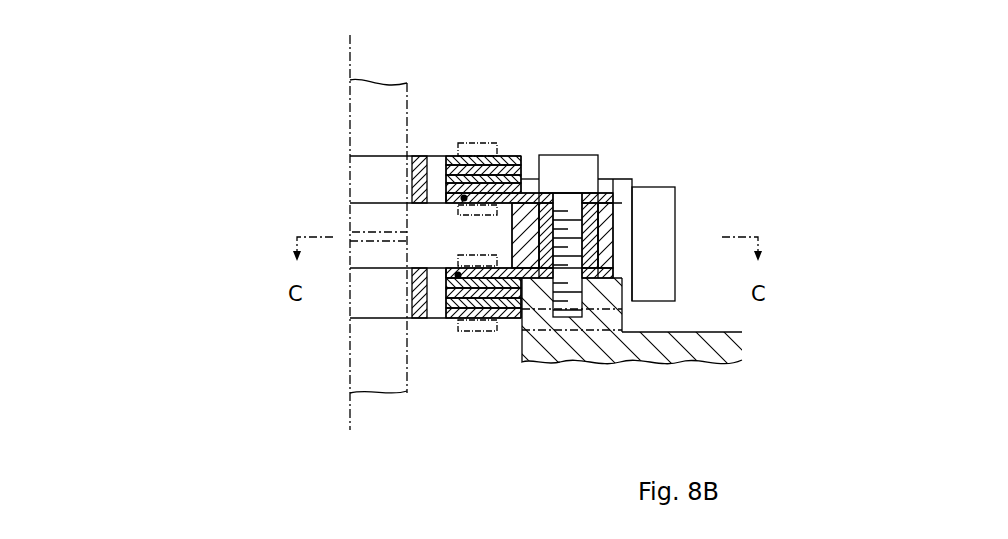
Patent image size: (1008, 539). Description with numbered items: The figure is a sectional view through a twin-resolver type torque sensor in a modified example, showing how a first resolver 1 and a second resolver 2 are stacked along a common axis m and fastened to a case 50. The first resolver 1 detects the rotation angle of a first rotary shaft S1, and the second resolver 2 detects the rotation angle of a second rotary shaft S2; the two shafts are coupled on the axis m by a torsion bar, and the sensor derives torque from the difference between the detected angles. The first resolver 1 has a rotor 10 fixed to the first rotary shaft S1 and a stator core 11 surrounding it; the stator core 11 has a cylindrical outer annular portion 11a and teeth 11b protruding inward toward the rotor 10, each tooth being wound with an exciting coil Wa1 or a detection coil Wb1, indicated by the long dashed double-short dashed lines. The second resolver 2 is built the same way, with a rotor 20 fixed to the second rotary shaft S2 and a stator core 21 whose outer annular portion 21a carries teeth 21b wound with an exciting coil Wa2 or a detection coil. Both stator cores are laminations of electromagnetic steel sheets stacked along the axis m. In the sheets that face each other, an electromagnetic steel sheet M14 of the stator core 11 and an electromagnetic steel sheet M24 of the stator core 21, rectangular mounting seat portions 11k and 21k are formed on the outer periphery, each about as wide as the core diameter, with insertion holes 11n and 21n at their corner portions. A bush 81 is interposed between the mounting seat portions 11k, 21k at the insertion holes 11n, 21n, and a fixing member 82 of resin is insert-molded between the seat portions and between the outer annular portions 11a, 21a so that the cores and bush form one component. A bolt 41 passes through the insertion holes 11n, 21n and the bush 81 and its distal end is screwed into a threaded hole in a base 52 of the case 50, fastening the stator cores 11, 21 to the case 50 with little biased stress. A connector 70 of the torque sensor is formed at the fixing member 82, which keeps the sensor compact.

The axis m is at (350, 62).
The first rotary shaft S1 is at (411, 96).
The second rotary shaft S2 is at (411, 391).
The first resolver 1 is at (388, 147).
The second resolver 2 is at (388, 322).
The rotor 10 is at (423, 156).
The rotor 20 is at (422, 318).
The stator core 11 is at (520, 153).
The stator core 21 is at (514, 322).
The outer annular portion 11a is at (488, 163).
The outer annular portion 21a is at (496, 332).
The teeth 11b is at (428, 165).
The teeth 21b is at (430, 300).
The mounting seat portion 11k is at (598, 190).
The mounting seat portion 21k is at (592, 290).
The insertion hole 11n is at (572, 190).
The insertion hole 21n is at (583, 300).
The electromagnetic steel sheet M14 is at (464, 201).
The electromagnetic steel sheet M24 is at (458, 279).
The bolt 41 is at (566, 155).
The case 50 is at (718, 333).
The base 52 is at (624, 323).
The connector 70 is at (655, 187).
The bush 81 is at (604, 250).
The fixing member 82 is at (604, 208).
The exciting coil Wa1 is at (473, 143).
The detection coil Wb1 is at (464, 198).
The exciting coil Wa2 is at (474, 333).